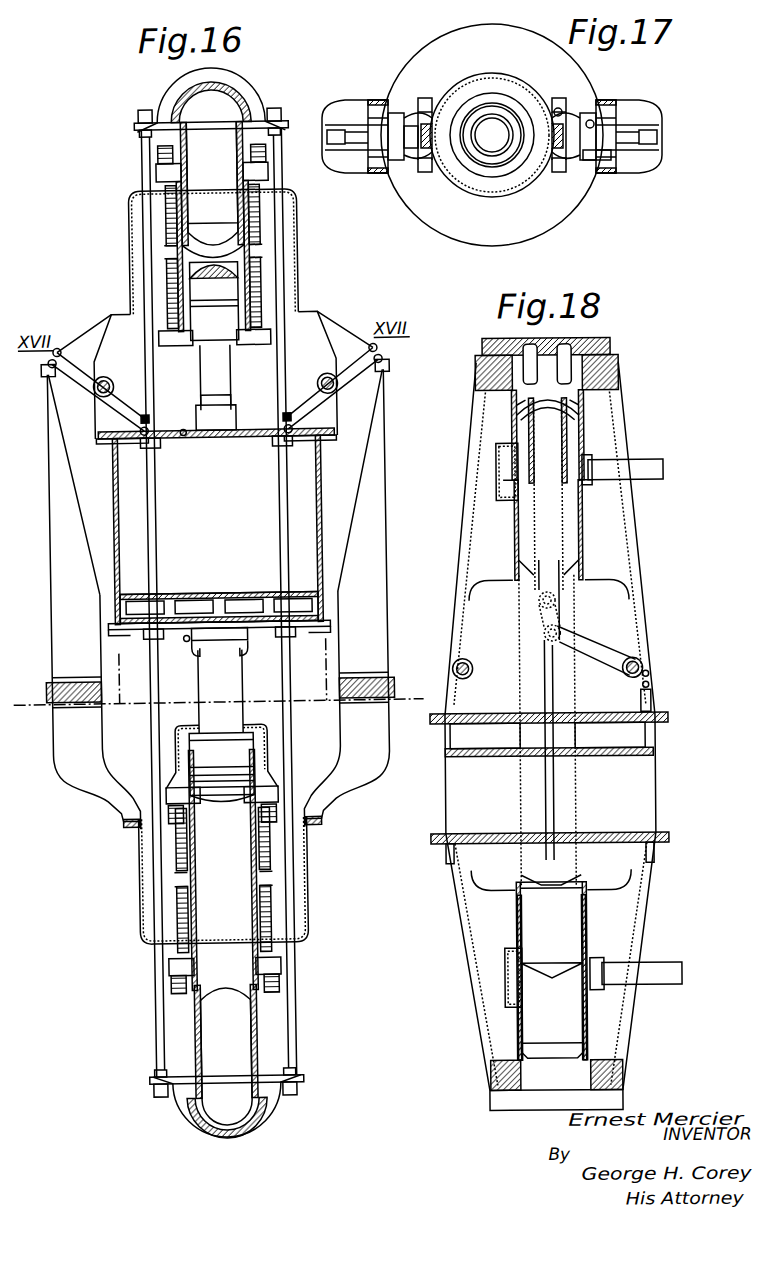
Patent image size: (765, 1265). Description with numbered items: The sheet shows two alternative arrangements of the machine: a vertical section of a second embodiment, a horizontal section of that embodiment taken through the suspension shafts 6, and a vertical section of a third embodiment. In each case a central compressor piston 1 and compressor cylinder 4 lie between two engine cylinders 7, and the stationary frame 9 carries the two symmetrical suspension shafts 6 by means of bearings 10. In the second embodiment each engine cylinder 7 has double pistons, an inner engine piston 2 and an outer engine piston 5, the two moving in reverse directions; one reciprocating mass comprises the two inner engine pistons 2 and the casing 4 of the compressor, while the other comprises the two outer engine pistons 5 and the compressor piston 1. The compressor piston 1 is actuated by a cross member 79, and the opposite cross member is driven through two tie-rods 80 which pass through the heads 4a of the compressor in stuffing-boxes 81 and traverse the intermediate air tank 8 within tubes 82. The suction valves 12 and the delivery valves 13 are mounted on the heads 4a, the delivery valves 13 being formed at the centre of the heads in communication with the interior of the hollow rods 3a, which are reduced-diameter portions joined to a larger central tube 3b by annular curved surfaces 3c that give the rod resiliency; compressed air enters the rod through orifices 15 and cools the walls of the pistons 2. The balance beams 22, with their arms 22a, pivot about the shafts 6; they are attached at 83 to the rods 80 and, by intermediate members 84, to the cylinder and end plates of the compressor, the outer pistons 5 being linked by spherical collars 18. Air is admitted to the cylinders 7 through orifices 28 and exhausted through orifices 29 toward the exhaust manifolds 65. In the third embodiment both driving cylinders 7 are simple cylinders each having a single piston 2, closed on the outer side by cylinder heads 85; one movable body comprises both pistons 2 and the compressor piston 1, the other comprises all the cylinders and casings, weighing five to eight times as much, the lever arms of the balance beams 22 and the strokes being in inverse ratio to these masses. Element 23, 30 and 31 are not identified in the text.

In FIG. 16, the compressor piston 1 is at (262, 594).
In FIG. 18, the compressor piston 1 is at (500, 756).
In FIG. 16, the engine piston 2 is at (232, 270).
In FIG. 18, the engine piston 2 is at (516, 420).
In FIG. 16, the cylindrical portion of hollow rod 3a is at (218, 530).
In FIG. 17, the cylindrical portion of hollow rod 3a is at (492, 135).
In FIG. 18, the cylindrical portion of hollow rod 3a is at (548, 494).
In FIG. 18, the central tube 3b is at (551, 710).
In FIG. 16, the annular curved surface 3c is at (182, 545).
In FIG. 16, the compressor cylinder 4 is at (115, 492).
In FIG. 17, the compressor cylinder 4 is at (418, 64).
In FIG. 18, the compressor cylinder 4 is at (445, 780).
In FIG. 16, the compressor head 4a is at (182, 598).
In FIG. 16, the outer engine piston 5 is at (219, 624).
In FIG. 16, the suspension shaft 6 is at (109, 375).
In FIG. 17, the suspension shaft 6 is at (588, 124).
In FIG. 18, the suspension shaft 6 is at (464, 658).
In FIG. 16, the engine cylinder 7 is at (185, 208).
In FIG. 17, the engine cylinder 7 is at (482, 114).
In FIG. 18, the engine cylinder 7 is at (584, 525).
In FIG. 16, the intermediate receiver casing 8 is at (303, 250).
In FIG. 16, the frame 9 is at (218, 600).
In FIG. 17, the frame 9 is at (372, 100).
In FIG. 17, the bearing 10 is at (612, 156).
In FIG. 16, the suction valve 12 is at (218, 547).
In FIG. 18, the suction valve 12 is at (490, 713).
In FIG. 16, the delivery valve 13 is at (218, 526).
In FIG. 18, the delivery valve 13 is at (547, 735).
In FIG. 18, the orifice 15 is at (524, 745).
In FIG. 16, the spherical collar 18 is at (226, 90).
In FIG. 16, the balance beam 22 is at (128, 408).
In FIG. 17, the balance beam 22 is at (420, 146).
In FIG. 18, the balance beam 22 is at (598, 658).
In FIG. 17, the balance beam arm 22a is at (410, 150).
In FIG. 16, the pivot pin 23 is at (288, 428).
In FIG. 17, the pivot pin 23 is at (560, 110).
In FIG. 18, the pivot pin 23 is at (546, 628).
In FIG. 18, the admission orifice 28 is at (576, 398).
In FIG. 18, the exhaust orifice 29 is at (592, 470).
In FIG. 16, the guide 30 is at (178, 260).
In FIG. 16, the ring 31 is at (262, 172).
In FIG. 17, the ring 31 is at (495, 135).
In FIG. 16, the exhaust manifold 65 is at (162, 179).
In FIG. 17, the exhaust manifold 65 is at (512, 76).
In FIG. 18, the exhaust manifold 65 is at (502, 488).
In FIG. 16, the cross member 79 is at (185, 113).
In FIG. 16, the tie-rod 80 is at (157, 500).
In FIG. 17, the tie-rod 80 is at (492, 137).
In FIG. 16, the stuffing-box 81 is at (218, 548).
In FIG. 16, the tube 82 is at (300, 215).
In FIG. 16, the attachment point 83 is at (146, 412).
In FIG. 17, the attachment point 83 is at (493, 131).
In FIG. 16, the intermediate member 84 is at (70, 470).
In FIG. 18, the cylinder head 85 is at (488, 345).